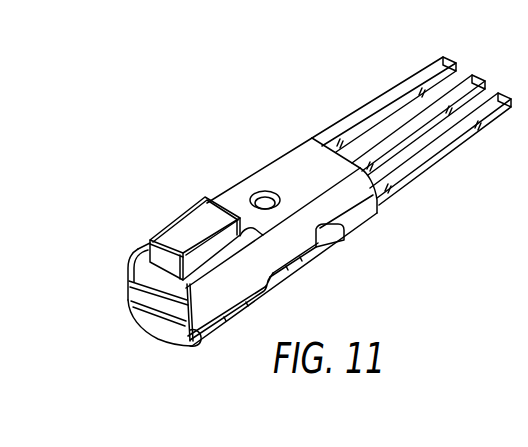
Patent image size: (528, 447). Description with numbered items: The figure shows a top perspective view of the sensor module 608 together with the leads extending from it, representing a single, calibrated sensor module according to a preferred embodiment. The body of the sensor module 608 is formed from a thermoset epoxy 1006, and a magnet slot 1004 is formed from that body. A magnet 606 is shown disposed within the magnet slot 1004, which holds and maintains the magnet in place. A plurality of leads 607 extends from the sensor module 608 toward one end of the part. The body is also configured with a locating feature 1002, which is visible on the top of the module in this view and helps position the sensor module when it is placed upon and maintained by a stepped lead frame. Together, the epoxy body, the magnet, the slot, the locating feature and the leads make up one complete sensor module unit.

The magnet 606 is at (190, 221).
The leads 607 is at (369, 100).
The sensor module 608 is at (148, 338).
The locating feature 1002 is at (259, 195).
The magnet slot 1004 is at (165, 269).
The thermoset epoxy 1006 is at (285, 247).